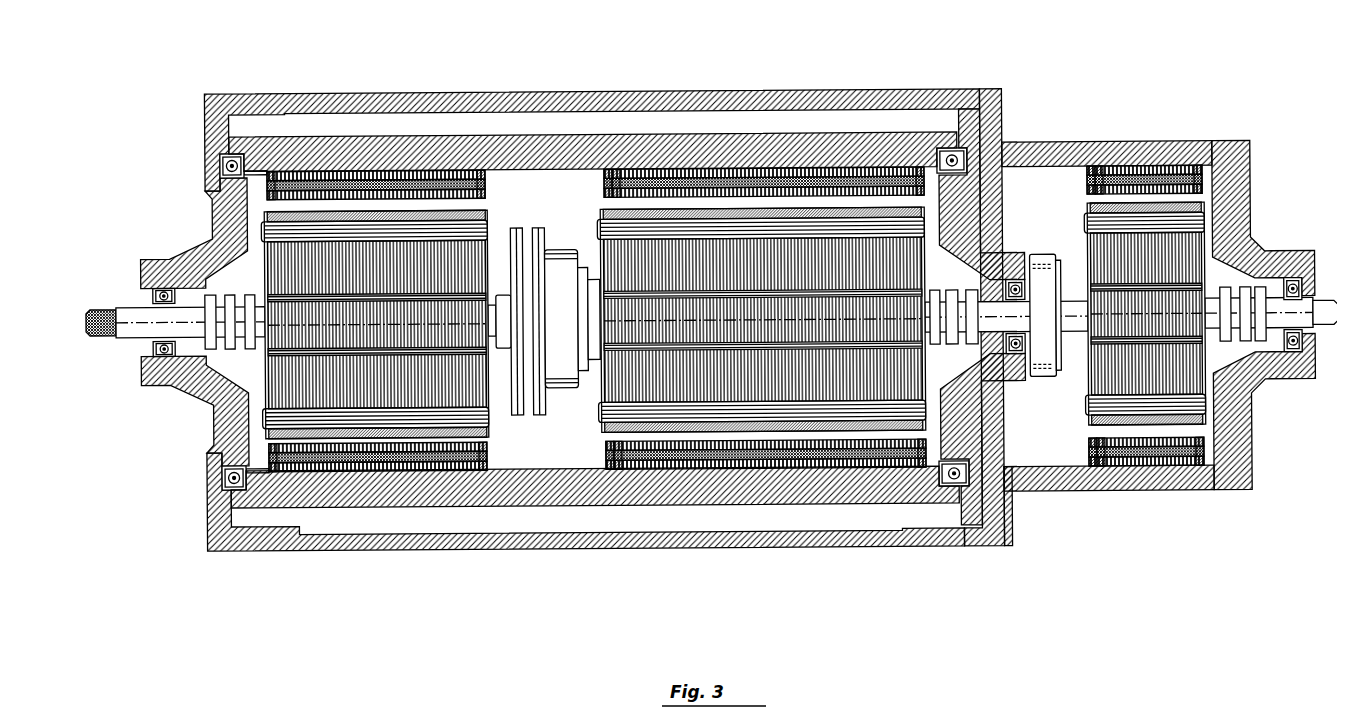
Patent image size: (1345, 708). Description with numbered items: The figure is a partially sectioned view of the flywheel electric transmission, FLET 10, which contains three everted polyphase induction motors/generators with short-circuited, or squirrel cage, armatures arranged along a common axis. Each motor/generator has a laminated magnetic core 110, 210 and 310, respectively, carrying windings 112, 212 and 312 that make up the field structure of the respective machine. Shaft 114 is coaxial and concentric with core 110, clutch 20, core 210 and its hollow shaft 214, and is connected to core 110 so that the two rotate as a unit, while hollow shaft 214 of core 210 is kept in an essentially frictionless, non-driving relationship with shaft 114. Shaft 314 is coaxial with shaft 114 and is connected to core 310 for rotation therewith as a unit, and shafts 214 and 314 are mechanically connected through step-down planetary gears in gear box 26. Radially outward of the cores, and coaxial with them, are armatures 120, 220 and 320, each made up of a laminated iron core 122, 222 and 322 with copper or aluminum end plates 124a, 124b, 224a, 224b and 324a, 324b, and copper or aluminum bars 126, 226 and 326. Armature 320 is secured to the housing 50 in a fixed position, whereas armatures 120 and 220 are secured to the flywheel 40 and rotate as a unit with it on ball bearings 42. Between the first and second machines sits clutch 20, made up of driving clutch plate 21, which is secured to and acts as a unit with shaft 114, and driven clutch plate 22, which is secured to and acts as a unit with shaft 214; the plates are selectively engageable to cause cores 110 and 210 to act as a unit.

The FLET 10 is at (1084, 108).
The clutch 20 is at (547, 342).
The driving clutch plate 21 is at (507, 411).
The driven clutch plate 22 is at (540, 403).
The gear box 26 is at (1035, 254).
The flywheel 40 is at (528, 134).
The ball bearings 42 is at (213, 158).
The housing 50 is at (1128, 140).
The laminated magnetic core 110 is at (235, 448).
The windings 112 is at (257, 415).
The shaft 114 is at (133, 290).
The armature 120 is at (412, 500).
The laminated iron core 122 is at (306, 464).
The end plate 124a is at (240, 190).
The end plate 124b is at (478, 170).
The bars 126 is at (397, 383).
The laminated magnetic core 210 is at (578, 470).
The windings 212 is at (920, 410).
The hollow shaft 214 is at (972, 392).
The armature 220 is at (822, 464).
The laminated iron core 222 is at (660, 464).
The end plate 224a is at (598, 188).
The end plate 224b is at (957, 207).
The bars 226 is at (730, 379).
The laminated magnetic core 310 is at (1205, 436).
The windings 312 is at (1205, 404).
The shaft 314 is at (1242, 248).
The armature 320 is at (1125, 464).
The laminated iron core 322 is at (1107, 464).
The end plate 324a is at (1080, 170).
The end plate 324b is at (1243, 170).
The bars 326 is at (1122, 343).